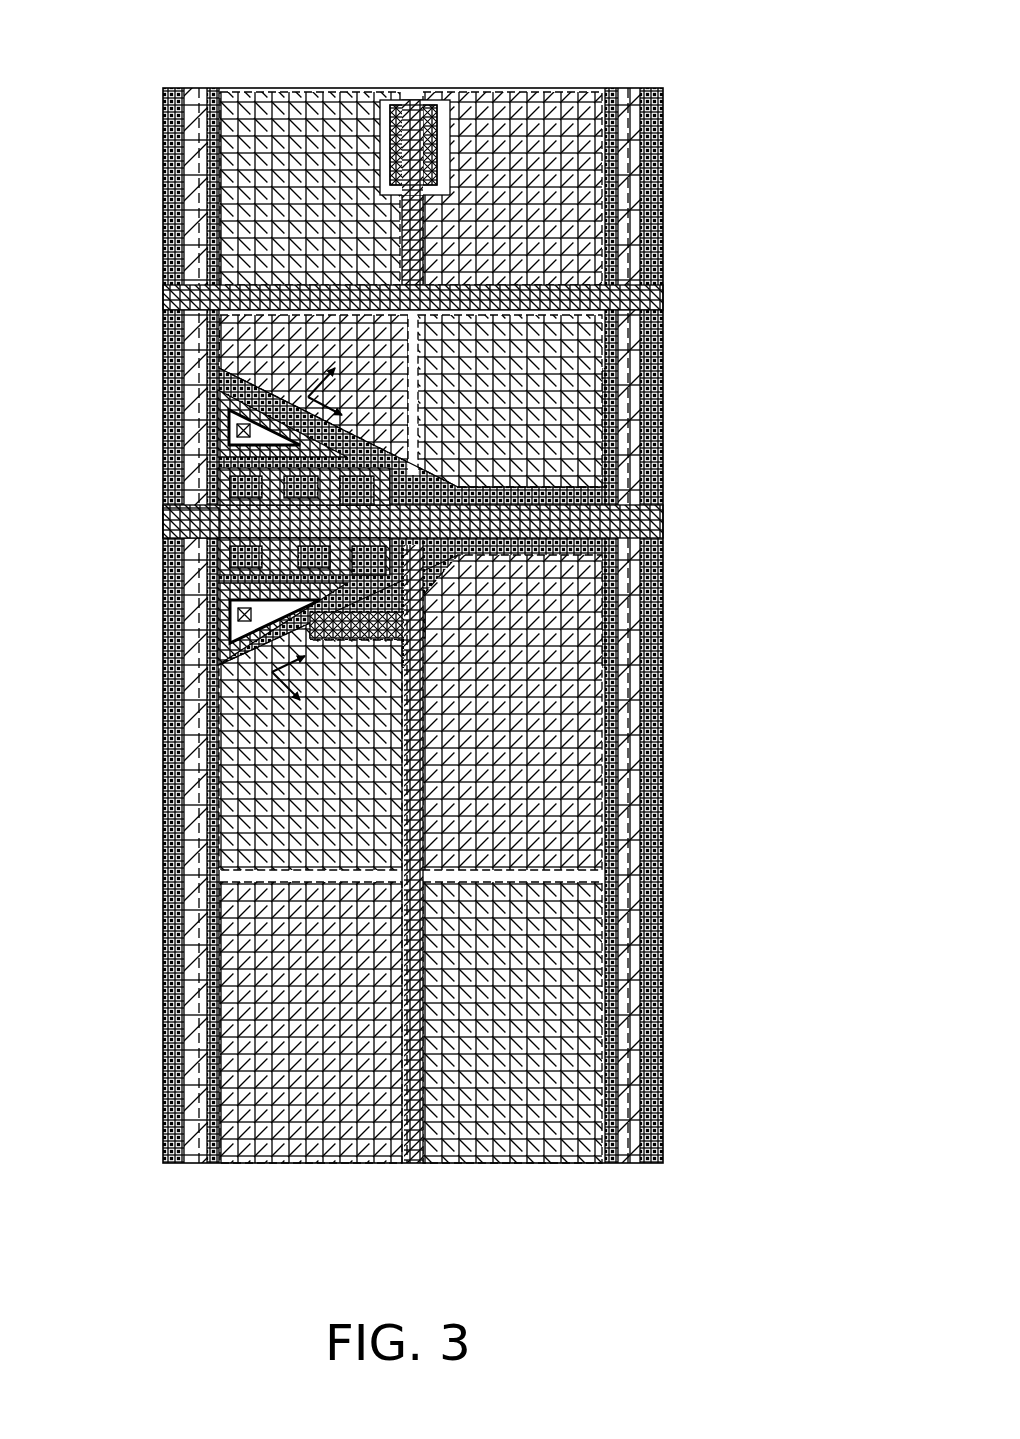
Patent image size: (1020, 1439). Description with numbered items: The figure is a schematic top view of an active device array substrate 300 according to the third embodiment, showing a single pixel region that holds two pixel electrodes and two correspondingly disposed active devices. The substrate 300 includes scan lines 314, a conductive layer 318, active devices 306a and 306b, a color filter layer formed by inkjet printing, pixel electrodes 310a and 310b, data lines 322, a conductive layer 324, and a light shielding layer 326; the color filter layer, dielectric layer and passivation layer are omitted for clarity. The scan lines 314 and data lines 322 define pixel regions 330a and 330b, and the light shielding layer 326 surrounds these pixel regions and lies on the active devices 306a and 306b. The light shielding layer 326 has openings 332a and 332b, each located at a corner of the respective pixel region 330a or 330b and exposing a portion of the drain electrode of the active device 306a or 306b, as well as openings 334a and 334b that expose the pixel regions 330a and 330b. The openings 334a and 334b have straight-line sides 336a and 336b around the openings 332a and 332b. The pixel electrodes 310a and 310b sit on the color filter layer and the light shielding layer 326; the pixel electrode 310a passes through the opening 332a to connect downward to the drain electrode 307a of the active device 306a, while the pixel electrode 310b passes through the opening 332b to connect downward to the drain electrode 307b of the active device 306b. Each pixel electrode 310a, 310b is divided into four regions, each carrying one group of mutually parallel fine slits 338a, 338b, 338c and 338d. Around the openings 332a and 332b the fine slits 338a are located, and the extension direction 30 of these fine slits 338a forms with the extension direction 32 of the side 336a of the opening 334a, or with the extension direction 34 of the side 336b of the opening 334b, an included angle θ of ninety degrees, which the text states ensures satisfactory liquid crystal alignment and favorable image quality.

The active device array substrate 300 is at (765, 1237).
The extension direction of the fine slits 30 is at (340, 455).
The extension direction of the side of the opening 32 is at (460, 482).
The extension direction of the side of the opening 34 is at (303, 645).
The active device 306a is at (165, 520).
The active device 306b is at (165, 612).
The drain electrode 307a is at (222, 404).
The drain electrode 307b is at (218, 630).
The pixel electrode 310a is at (490, 95).
The pixel electrode 310b is at (490, 1165).
The scan lines 314 is at (663, 538).
The conductive layer 318 is at (663, 298).
The data lines 322 is at (195, 250).
The conductive layer 324 is at (393, 134).
The light shielding layer 326 is at (229, 410).
The pixel region 330a is at (567, 124).
The pixel region 330b is at (572, 1112).
The opening 332a is at (222, 407).
The opening 332b is at (212, 626).
The opening 334a is at (230, 104).
The opening 334b is at (222, 838).
The side 336a is at (246, 377).
The side 336b is at (229, 660).
The fine slits 338a is at (225, 330).
The fine slits 338b is at (598, 380).
The fine slits 338c is at (592, 166).
The fine slits 338d is at (325, 105).